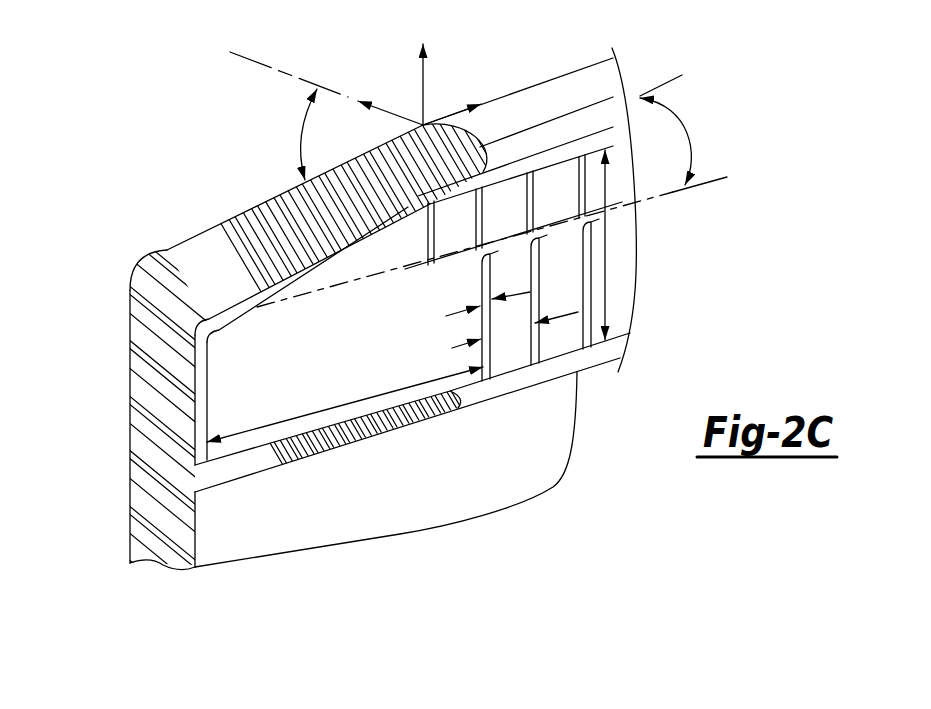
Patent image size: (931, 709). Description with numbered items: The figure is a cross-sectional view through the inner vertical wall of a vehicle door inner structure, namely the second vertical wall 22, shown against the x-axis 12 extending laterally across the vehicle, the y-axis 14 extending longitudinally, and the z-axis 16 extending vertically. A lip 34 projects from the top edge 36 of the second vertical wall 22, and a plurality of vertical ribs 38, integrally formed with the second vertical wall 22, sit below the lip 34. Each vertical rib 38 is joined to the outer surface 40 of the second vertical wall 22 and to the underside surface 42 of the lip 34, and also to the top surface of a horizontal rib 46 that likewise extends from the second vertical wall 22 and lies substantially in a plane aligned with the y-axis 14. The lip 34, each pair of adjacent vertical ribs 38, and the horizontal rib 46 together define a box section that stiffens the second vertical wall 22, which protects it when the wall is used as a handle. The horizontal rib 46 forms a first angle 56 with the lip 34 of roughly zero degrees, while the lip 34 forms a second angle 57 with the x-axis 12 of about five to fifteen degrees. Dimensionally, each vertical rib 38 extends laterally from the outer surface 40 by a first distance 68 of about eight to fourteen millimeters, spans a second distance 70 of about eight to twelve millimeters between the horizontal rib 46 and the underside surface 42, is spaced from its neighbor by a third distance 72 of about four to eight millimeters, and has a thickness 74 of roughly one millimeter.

The x-axis 12 is at (387, 110).
The y-axis 14 is at (448, 110).
The z-axis 16 is at (421, 70).
The second vertical wall 22 is at (127, 243).
The lip 34 is at (205, 281).
The top edge 36 is at (174, 270).
The vertical ribs 38 is at (531, 338).
The outer surface 40 is at (398, 515).
The underside surface 42 is at (487, 221).
The horizontal rib 46 is at (308, 449).
The first angle 56 is at (692, 140).
The second angle 57 is at (295, 134).
The first distance 68 is at (286, 418).
The second distance 70 is at (607, 252).
The third distance 72 is at (501, 337).
The thickness 74 is at (474, 313).